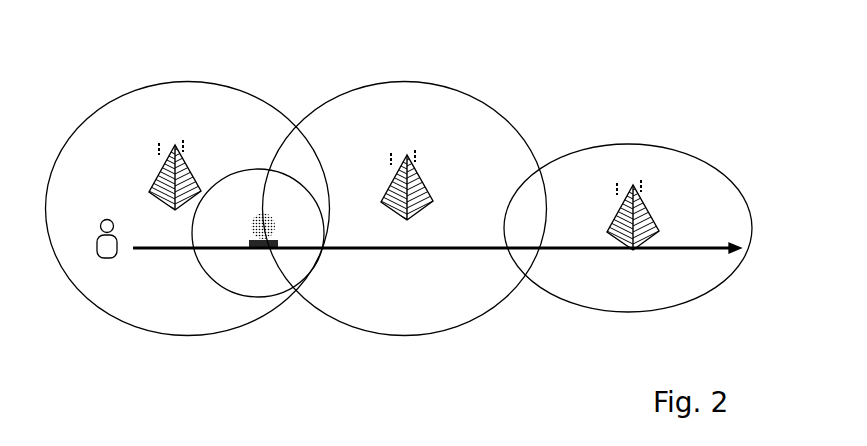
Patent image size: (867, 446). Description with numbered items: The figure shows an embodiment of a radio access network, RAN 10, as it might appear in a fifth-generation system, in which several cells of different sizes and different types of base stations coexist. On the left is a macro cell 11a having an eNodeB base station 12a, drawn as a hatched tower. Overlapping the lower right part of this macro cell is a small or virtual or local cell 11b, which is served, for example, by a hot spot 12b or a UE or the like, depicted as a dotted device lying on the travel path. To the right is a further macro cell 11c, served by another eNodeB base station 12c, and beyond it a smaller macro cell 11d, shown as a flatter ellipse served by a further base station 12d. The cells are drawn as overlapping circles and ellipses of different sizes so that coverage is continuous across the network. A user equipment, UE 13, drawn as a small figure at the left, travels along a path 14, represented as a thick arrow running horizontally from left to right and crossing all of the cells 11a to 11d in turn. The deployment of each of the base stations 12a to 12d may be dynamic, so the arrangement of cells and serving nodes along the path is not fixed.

The RAN 10 is at (642, 46).
The macro cell 11a is at (177, 81).
The small or virtual or local cell 11b is at (248, 297).
The further macro cell 11c is at (407, 82).
The smaller macro cell 11d is at (662, 147).
The eNodeB base station 12a is at (190, 167).
The hot spot 12b is at (248, 238).
The eNodeB base station 12c is at (423, 177).
The further base station 12d is at (653, 210).
The UE 13 is at (95, 254).
The path 14 is at (410, 248).